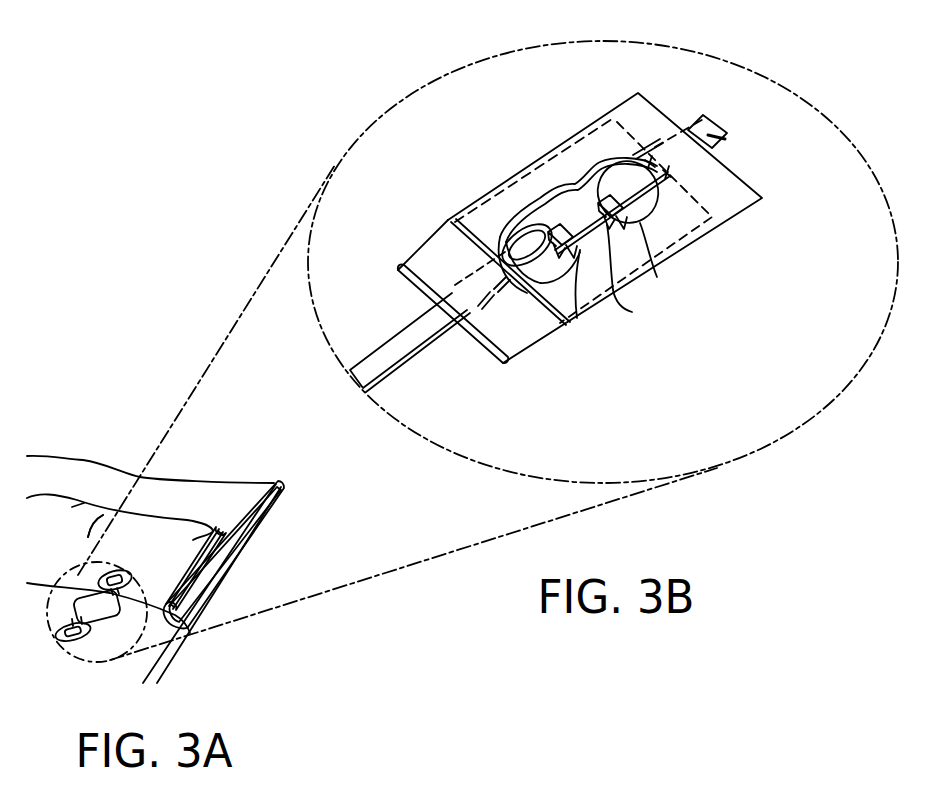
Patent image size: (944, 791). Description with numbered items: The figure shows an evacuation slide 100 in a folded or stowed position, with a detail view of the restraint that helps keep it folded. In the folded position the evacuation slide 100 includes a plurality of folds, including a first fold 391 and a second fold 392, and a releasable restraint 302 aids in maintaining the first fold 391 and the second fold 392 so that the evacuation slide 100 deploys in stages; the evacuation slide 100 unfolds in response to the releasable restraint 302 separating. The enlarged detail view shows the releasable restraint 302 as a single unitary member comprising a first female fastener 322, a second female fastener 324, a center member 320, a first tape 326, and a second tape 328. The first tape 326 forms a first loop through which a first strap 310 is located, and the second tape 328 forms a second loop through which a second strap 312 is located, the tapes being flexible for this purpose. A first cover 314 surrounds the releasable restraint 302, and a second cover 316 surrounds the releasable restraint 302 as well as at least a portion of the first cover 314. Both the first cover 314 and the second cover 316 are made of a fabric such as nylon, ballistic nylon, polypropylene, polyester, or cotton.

In FIG. 3A, the evacuation slide 100 is at (82, 477).
In FIG. 3A, the first fold 391 is at (283, 481).
In FIG. 3A, the second fold 392 is at (188, 631).
In FIG. 3B, the releasable restraint 302 is at (579, 223).
In FIG. 3B, the first strap 310 is at (360, 350).
In FIG. 3B, the second strap 312 is at (723, 136).
In FIG. 3B, the first cover 314 is at (424, 247).
In FIG. 3B, the second cover 316 is at (735, 205).
In FIG. 3B, the center member 320 is at (633, 313).
In FIG. 3B, the first female fastener 322 is at (578, 320).
In FIG. 3B, the second female fastener 324 is at (658, 278).
In FIG. 3B, the first tape 326 is at (508, 195).
In FIG. 3B, the second tape 328 is at (597, 178).